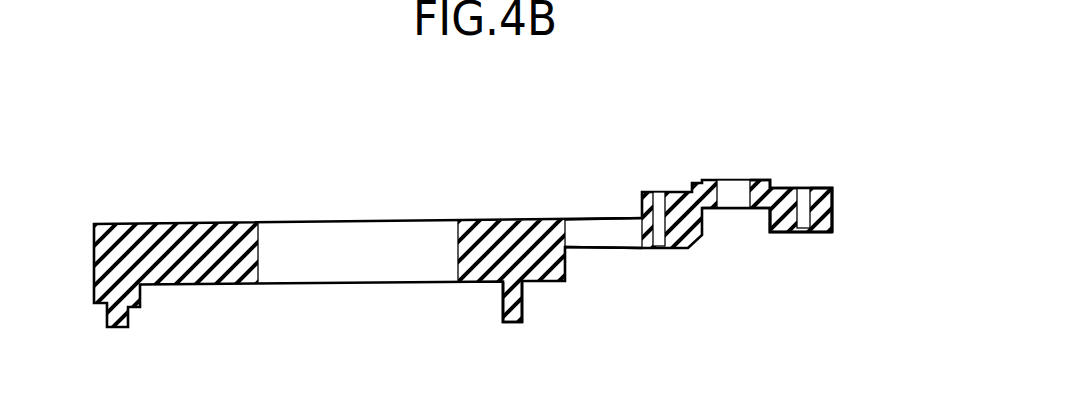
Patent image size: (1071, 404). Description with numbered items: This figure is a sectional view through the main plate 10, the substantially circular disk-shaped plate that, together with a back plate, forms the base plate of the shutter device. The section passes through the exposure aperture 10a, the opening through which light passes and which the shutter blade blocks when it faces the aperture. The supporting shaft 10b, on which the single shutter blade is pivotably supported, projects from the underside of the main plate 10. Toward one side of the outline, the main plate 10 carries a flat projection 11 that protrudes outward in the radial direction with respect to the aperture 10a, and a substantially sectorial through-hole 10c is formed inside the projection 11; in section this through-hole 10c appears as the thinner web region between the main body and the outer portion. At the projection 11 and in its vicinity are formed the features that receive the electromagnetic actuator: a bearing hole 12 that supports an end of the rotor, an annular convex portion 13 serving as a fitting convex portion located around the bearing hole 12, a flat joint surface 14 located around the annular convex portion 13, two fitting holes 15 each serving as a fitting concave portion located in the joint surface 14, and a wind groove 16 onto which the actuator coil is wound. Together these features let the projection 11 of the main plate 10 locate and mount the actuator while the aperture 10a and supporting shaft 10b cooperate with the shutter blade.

The main plate 10 is at (480, 216).
The exposure aperture 10a is at (270, 240).
The supporting shaft 10b is at (517, 323).
The through-hole 10c is at (572, 221).
The projection 11 is at (846, 194).
The bearing hole 12 is at (744, 181).
The annular convex portion 13 is at (771, 188).
The joint surface 14 is at (834, 190).
The fitting hole 15 is at (656, 195).
The wind groove 16 is at (768, 219).